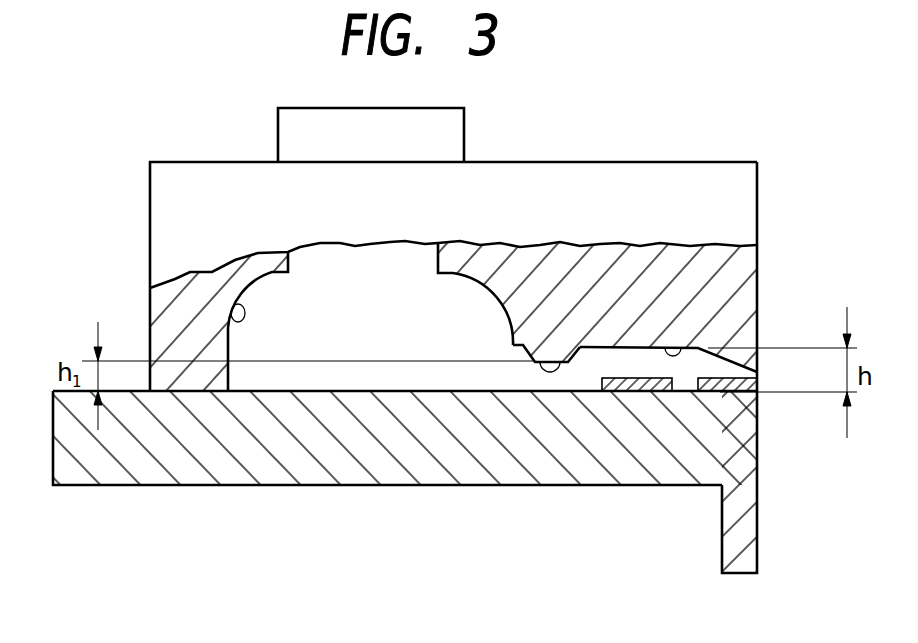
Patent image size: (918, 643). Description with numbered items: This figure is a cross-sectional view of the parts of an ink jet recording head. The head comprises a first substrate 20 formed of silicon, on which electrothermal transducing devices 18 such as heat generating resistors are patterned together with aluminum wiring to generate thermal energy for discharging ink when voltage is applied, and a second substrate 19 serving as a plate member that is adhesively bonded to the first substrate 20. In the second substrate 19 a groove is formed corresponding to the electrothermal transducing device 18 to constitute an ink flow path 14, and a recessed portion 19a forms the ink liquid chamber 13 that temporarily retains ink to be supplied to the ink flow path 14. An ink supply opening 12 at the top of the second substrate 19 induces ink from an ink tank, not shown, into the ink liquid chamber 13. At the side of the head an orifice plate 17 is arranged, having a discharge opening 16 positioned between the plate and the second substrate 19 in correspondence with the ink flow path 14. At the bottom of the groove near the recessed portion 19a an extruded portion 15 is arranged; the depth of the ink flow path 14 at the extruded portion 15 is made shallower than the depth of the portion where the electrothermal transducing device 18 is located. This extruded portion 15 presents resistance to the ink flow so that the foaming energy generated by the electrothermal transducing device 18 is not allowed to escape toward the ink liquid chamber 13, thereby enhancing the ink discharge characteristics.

The ink supply opening 12 is at (455, 103).
The ink liquid chamber 13 is at (413, 293).
The ink flow path 14 is at (557, 377).
The extruded portion 15 is at (555, 367).
The discharge opening 16 is at (720, 380).
The orifice plate 17 is at (745, 574).
The electrothermal transducing device 18 is at (627, 391).
The second substrate 19 is at (439, 249).
The recessed portion 19a is at (226, 328).
The first substrate 20 is at (192, 485).